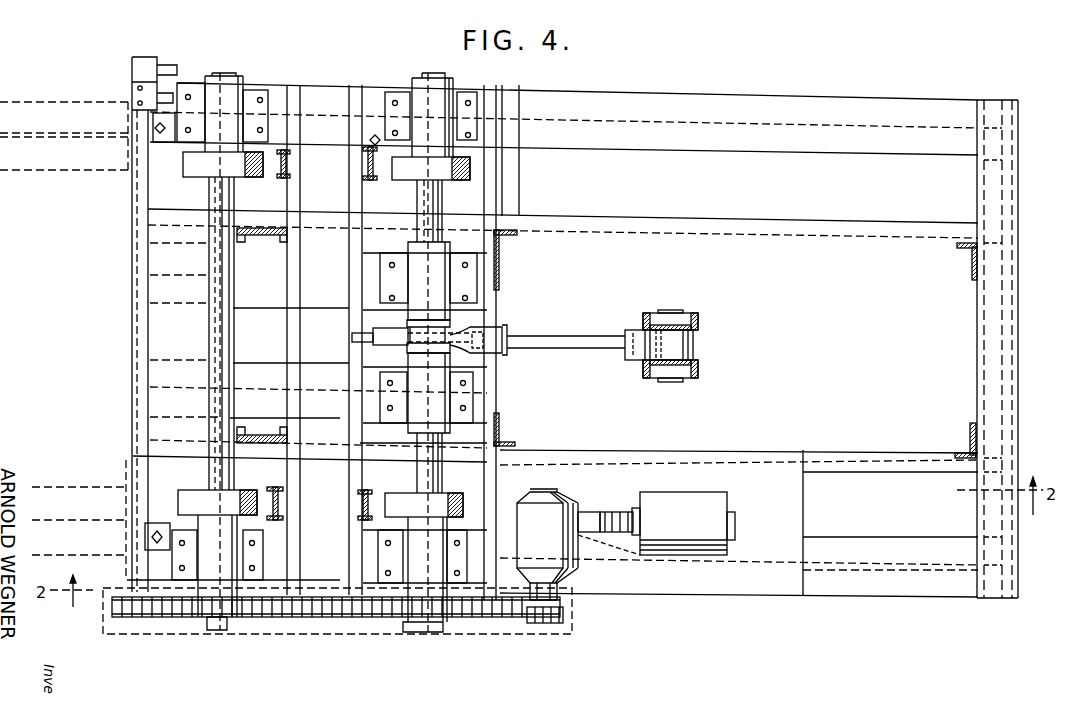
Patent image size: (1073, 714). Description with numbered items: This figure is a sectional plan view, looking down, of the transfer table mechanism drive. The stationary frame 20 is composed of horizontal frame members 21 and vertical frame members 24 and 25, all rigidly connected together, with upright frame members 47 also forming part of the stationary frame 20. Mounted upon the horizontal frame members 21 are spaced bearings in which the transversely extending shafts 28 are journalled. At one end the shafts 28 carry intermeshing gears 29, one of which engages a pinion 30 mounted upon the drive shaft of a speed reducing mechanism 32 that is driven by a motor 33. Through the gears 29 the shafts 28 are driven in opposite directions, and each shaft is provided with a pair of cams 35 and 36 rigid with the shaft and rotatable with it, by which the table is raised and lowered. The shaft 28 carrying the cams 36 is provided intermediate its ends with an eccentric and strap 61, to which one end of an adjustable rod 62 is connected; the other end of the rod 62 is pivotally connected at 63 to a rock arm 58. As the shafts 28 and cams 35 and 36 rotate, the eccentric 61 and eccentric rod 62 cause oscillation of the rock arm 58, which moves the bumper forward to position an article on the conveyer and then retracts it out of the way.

The stationary frame 20 is at (131, 342).
The horizontal frame members 21 is at (700, 105).
The vertical frame member 24 is at (500, 242).
The vertical frame member 25 is at (970, 437).
The shafts 28 is at (435, 207).
The intermeshing gears 29 is at (168, 607).
The pinion 30 is at (542, 622).
The speed reducing mechanism 32 is at (578, 544).
The motor 33 is at (683, 523).
The cams 35 is at (198, 166).
The cams 36 is at (410, 172).
The upright frame members 47 is at (267, 237).
The rock arm 58 is at (697, 316).
The eccentric and strap 61 is at (363, 336).
The adjustable rod 62 is at (547, 338).
The pivotal connection 63 is at (697, 343).